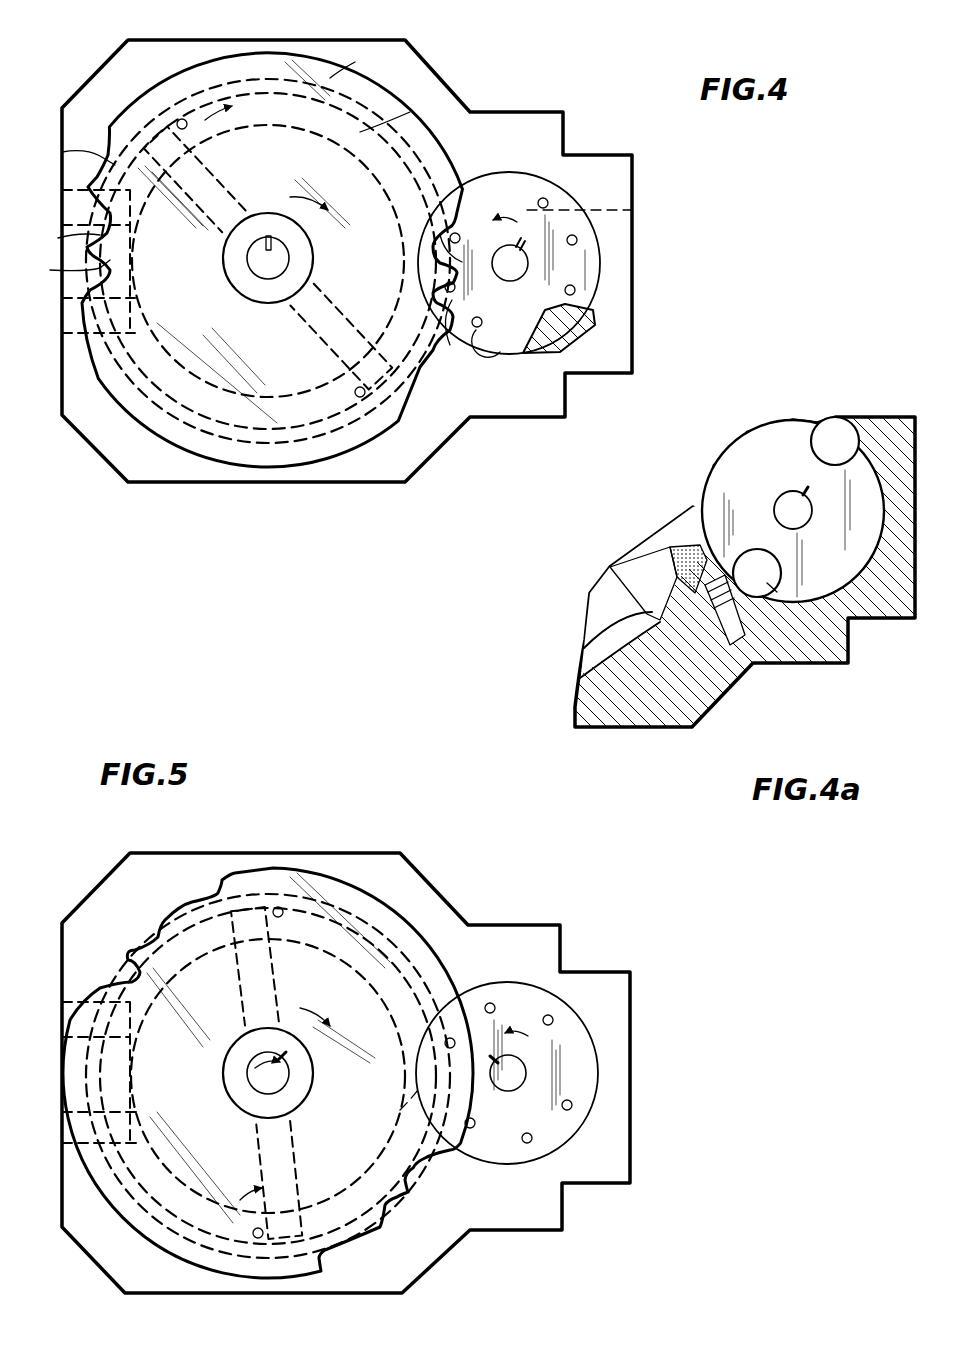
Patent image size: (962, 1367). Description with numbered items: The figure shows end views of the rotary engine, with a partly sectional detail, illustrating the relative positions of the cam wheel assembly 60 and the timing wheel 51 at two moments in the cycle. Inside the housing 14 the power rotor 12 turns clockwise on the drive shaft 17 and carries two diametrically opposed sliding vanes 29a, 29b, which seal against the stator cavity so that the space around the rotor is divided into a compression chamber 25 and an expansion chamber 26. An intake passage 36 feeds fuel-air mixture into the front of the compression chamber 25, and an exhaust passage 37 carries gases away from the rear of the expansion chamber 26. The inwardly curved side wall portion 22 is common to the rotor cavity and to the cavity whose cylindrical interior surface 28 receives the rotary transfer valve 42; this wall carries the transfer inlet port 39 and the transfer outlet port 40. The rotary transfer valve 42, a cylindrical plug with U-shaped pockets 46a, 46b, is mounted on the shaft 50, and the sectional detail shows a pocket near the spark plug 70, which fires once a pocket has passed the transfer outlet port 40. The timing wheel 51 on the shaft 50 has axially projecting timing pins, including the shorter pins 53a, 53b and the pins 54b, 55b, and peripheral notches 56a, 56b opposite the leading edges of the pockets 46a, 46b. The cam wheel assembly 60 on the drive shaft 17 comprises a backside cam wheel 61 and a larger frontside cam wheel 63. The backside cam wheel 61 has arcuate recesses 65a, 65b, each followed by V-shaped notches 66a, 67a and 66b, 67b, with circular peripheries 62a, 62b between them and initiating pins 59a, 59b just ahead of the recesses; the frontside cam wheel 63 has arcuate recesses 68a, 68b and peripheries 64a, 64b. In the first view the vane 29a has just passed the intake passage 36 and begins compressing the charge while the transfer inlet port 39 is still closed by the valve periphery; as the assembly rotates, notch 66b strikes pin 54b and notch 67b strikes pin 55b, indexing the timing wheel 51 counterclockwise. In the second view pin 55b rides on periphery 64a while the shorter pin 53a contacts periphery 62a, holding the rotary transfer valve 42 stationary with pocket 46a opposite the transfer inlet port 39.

In FIG. 4, the power rotor 12 is at (122, 398).
In FIG. 5, the power rotor 12 is at (268, 1073).
In FIG. 4, the housing 14 is at (100, 73).
In FIG. 5, the housing 14 is at (165, 830).
In FIG. 4, the drive shaft 17 is at (248, 270).
In FIG. 5, the drive shaft 17 is at (256, 1082).
In FIG. 5, the inwardly curved side wall portion 22 is at (366, 1102).
In FIG. 4, the compression chamber 25 is at (283, 65).
In FIG. 4, the expansion chamber 26 is at (168, 482).
In FIG. 4, the cylindrical interior surface 28 is at (607, 374).
In FIG. 4A, the cylindrical interior surface 28 is at (880, 618).
In FIG. 4, the sliding vane 29a is at (233, 184).
In FIG. 5, the sliding vane 29a is at (238, 1003).
In FIG. 4, the sliding vane 29b is at (318, 340).
In FIG. 4A, the sliding vane 29b is at (613, 590).
In FIG. 5, the sliding vane 29b is at (160, 1213).
In FIG. 4, the intake passage 36 is at (81, 252).
In FIG. 5, the intake passage 36 is at (96, 1072).
In FIG. 4, the exhaust passage 37 is at (60, 335).
In FIG. 5, the exhaust passage 37 is at (99, 1127).
In FIG. 4, the transfer inlet port 39 is at (450, 158).
In FIG. 5, the transfer inlet port 39 is at (330, 1009).
In FIG. 4, the transfer outlet port 40 is at (407, 323).
In FIG. 4A, the transfer outlet port 40 is at (692, 545).
In FIG. 5, the transfer outlet port 40 is at (370, 1126).
In FIG. 4, the rotary transfer valve 42 is at (577, 320).
In FIG. 4A, the rotary transfer valve 42 is at (768, 488).
In FIG. 4, the pocket 46a is at (600, 212).
In FIG. 4A, the pocket 46a is at (826, 422).
In FIG. 5, the pocket 46a is at (480, 993).
In FIG. 4, the pocket 46b is at (490, 365).
In FIG. 4A, the pocket 46b is at (812, 665).
In FIG. 5, the pocket 46b is at (550, 1150).
In FIG. 4, the rotary transfer valve shaft 50 is at (528, 264).
In FIG. 4A, the rotary transfer valve shaft 50 is at (807, 500).
In FIG. 5, the rotary transfer valve shaft 50 is at (508, 1073).
In FIG. 4, the timing wheel 51 is at (600, 208).
In FIG. 5, the timing wheel 51 is at (588, 1012).
In FIG. 4, the timing pin 53a is at (548, 201).
In FIG. 5, the timing pin 53a is at (455, 1040).
In FIG. 4, the timing pin 53b is at (559, 335).
In FIG. 4, the timing pin 54b is at (455, 288).
In FIG. 4, the timing pin 55b is at (459, 234).
In FIG. 5, the timing pin 55b is at (480, 1147).
In FIG. 4, the notch 56a is at (527, 186).
In FIG. 4, the notch 56b is at (500, 360).
In FIG. 5, the notch 56b is at (587, 1093).
In FIG. 4, the initiating pin 59a is at (182, 119).
In FIG. 5, the initiating pin 59a is at (278, 907).
In FIG. 4, the initiating pin 59b is at (355, 390).
In FIG. 4, the cam wheel assembly 60 is at (247, 52).
In FIG. 4, the backside cam wheel 61 is at (318, 80).
In FIG. 5, the backside cam wheel 61 is at (320, 883).
In FIG. 4, the outer circular periphery 62a is at (383, 97).
In FIG. 5, the outer circular periphery 62a is at (423, 940).
In FIG. 4, the outer circular periphery 62b is at (218, 470).
In FIG. 4, the frontside cam wheel 63 is at (355, 62).
In FIG. 5, the frontside cam wheel 63 is at (388, 920).
In FIG. 4, the outer circular periphery 64a is at (410, 112).
In FIG. 5, the outer circular periphery 64a is at (405, 918).
In FIG. 4, the outer circular periphery 64b is at (157, 427).
In FIG. 4, the arcuate recess 65a is at (110, 148).
In FIG. 4, the arcuate recess 65b is at (357, 485).
In FIG. 4, the V-shaped notch 66a is at (61, 225).
In FIG. 4, the V-shaped notch 66b is at (459, 341).
In FIG. 4, the V-shaped notch 67a is at (65, 268).
In FIG. 4, the V-shaped notch 67b is at (470, 240).
In FIG. 4, the arcuate recess 68a is at (71, 148).
In FIG. 4, the arcuate recess 68b is at (417, 425).
In FIG. 4A, the spark plug 70 is at (738, 660).